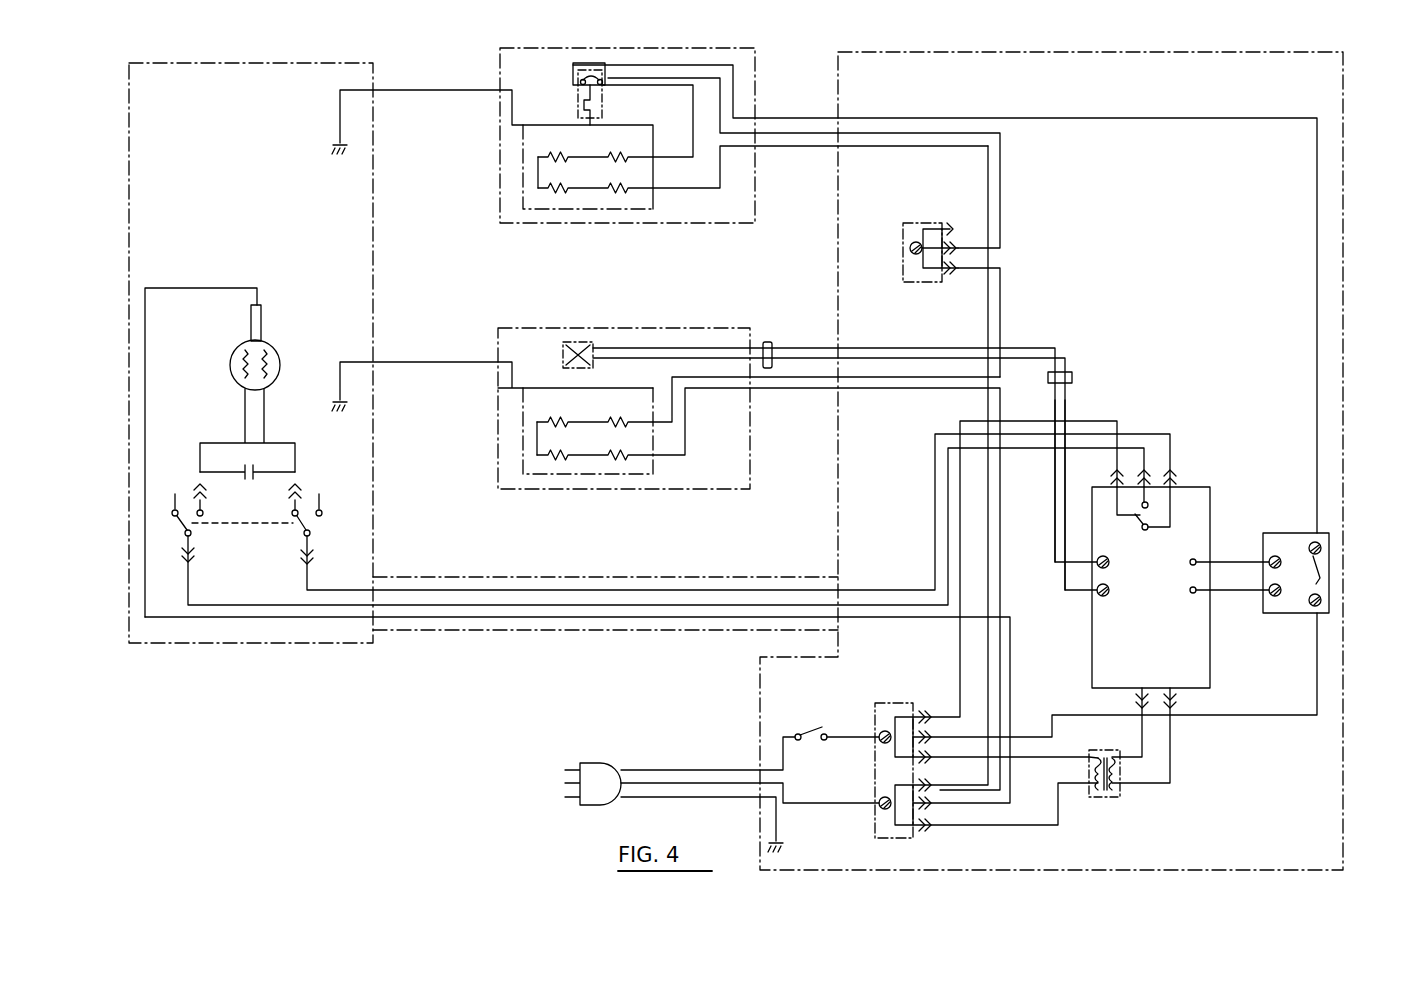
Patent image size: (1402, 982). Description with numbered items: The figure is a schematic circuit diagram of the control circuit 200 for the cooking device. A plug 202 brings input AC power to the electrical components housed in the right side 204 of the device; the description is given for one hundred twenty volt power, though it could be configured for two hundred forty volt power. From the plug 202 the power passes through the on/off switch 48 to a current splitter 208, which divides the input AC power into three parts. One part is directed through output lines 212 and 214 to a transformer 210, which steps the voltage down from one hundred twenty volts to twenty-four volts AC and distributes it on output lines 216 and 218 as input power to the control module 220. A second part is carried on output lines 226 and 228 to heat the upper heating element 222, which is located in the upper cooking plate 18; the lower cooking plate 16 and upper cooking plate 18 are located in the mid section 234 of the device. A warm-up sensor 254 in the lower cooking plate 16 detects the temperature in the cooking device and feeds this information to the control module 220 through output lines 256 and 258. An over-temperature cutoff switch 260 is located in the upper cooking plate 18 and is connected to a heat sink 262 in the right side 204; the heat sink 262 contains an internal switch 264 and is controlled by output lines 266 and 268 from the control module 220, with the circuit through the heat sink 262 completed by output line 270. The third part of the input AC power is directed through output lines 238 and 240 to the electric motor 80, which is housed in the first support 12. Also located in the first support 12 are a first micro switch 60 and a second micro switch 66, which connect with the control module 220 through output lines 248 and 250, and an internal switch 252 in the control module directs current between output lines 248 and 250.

The first support 12 is at (360, 78).
The lower cooking plate 16 is at (500, 340).
The upper cooking plate 18 is at (500, 204).
The on/off switch 48 is at (813, 726).
The first micro switch 60 is at (174, 504).
The second micro switch 66 is at (314, 504).
The electric motor 80 is at (266, 353).
The control circuit 200 is at (446, 803).
The plug 202 is at (597, 768).
The right side 204 is at (1056, 89).
The current splitter 208 is at (887, 700).
The transformer 210 is at (1110, 800).
The output line 212 is at (1025, 755).
The output line 214 is at (1052, 831).
The output line 216 is at (1125, 752).
The output line 218 is at (1144, 786).
The control module 220 is at (1210, 490).
The upper heating element 222 is at (655, 202).
The output line 226 is at (948, 788).
The output line 228 is at (982, 792).
The mid section 234 is at (772, 88).
The output line 238 is at (958, 661).
The output line 240 is at (1006, 806).
The output line 248 is at (190, 581).
The output line 250 is at (309, 582).
The internal switch 252 is at (1140, 529).
The warm-up sensor 254 is at (579, 337).
The output line 256 is at (1055, 538).
The output line 258 is at (1065, 590).
The over-temperature cutoff switch 260 is at (573, 73).
The heat sink 262 is at (1288, 533).
The internal switch 264 is at (1320, 579).
The output line 266 is at (1233, 560).
The output line 268 is at (1233, 593).
The output line 270 is at (947, 734).